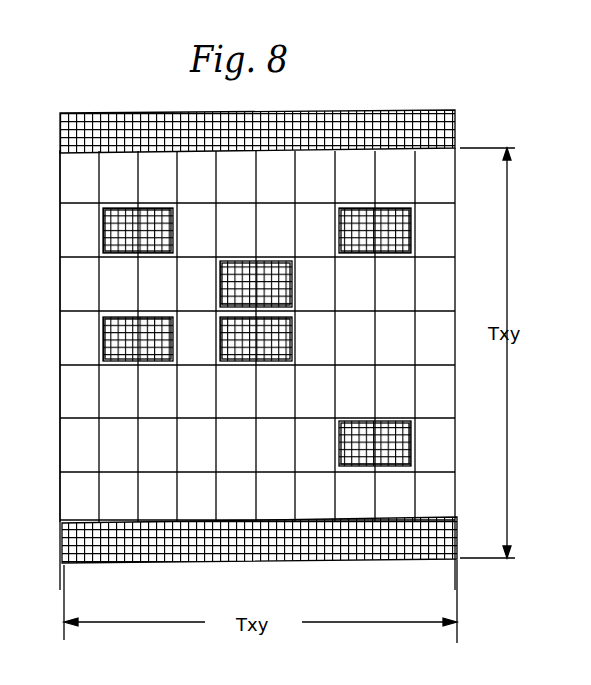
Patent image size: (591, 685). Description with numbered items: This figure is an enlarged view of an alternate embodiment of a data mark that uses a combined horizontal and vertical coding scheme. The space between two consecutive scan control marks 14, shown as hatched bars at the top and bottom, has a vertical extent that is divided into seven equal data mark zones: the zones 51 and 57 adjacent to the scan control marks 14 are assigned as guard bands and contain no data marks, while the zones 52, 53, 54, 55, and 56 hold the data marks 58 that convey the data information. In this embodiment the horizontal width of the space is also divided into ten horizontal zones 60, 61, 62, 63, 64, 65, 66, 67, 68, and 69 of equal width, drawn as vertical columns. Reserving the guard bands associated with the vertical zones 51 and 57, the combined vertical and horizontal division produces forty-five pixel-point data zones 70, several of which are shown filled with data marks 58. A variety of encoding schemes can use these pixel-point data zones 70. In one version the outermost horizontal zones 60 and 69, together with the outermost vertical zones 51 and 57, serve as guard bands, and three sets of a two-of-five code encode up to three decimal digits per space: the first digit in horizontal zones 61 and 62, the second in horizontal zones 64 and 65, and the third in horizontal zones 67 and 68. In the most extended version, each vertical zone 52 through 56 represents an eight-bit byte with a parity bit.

The scan control mark 14 is at (456, 116).
The guard band zone 51 is at (78, 192).
The data mark zone 52 is at (82, 236).
The data mark zone 53 is at (82, 299).
The data mark zone 54 is at (82, 351).
The data mark zone 55 is at (82, 398).
The data mark zone 56 is at (80, 454).
The guard band zone 57 is at (80, 506).
The data mark 58 is at (227, 369).
The horizontal zone 60 is at (75, 170).
The horizontal zone 61 is at (117, 170).
The horizontal zone 62 is at (157, 167).
The horizontal zone 63 is at (194, 167).
The horizontal zone 64 is at (235, 165).
The horizontal zone 65 is at (270, 165).
The horizontal zone 66 is at (315, 163).
The horizontal zone 67 is at (355, 165).
The horizontal zone 68 is at (392, 163).
The horizontal zone 69 is at (433, 163).
The pixel-point data zone 70 is at (198, 390).